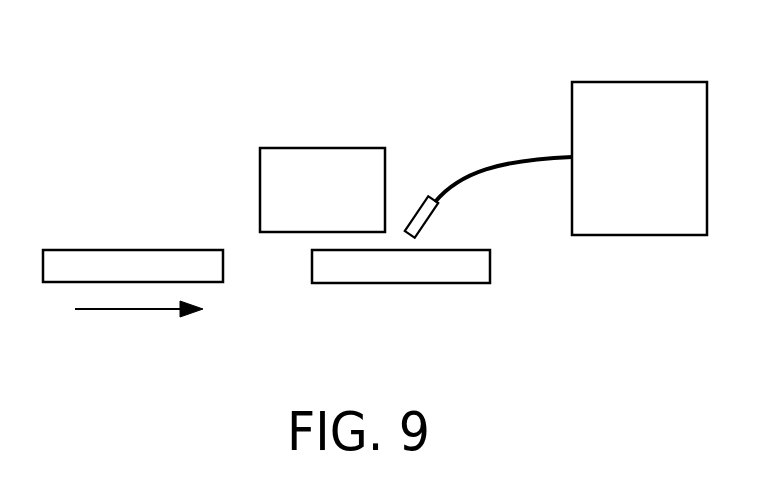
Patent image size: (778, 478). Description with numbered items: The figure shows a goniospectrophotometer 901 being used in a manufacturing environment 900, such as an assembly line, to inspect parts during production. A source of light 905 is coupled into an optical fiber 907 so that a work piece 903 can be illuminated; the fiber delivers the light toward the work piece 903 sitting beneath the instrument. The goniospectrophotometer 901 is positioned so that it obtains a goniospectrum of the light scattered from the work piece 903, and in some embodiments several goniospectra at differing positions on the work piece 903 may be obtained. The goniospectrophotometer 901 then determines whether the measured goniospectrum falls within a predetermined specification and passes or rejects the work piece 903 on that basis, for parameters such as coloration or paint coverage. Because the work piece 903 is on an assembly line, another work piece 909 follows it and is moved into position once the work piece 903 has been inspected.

The manufacturing environment 900 is at (141, 101).
The goniospectrophotometer 901 is at (342, 200).
The work piece 903 is at (403, 283).
The source of light 905 is at (666, 171).
The optical fiber 907 is at (421, 203).
The another work piece 909 is at (58, 282).